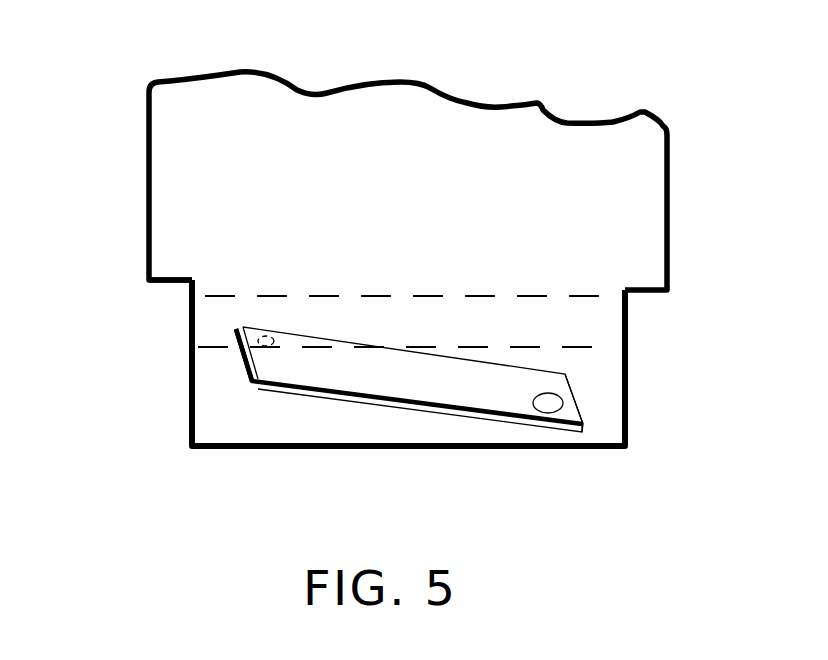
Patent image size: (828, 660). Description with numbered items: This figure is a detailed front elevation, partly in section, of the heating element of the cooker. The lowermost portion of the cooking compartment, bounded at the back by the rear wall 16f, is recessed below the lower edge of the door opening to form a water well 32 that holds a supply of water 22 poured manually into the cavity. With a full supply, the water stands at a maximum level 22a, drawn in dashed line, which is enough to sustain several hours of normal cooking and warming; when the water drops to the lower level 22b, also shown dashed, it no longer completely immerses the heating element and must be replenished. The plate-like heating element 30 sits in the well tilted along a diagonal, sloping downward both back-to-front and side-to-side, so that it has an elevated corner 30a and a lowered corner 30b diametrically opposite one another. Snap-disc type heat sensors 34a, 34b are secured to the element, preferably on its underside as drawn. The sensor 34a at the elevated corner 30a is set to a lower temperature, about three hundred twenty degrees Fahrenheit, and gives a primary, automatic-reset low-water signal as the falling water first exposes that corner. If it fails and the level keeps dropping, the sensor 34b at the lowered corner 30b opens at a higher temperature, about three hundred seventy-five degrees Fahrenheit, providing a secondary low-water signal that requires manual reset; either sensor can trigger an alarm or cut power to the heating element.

The rear wall 16f is at (421, 190).
The water 22 is at (606, 433).
The maximum water level 22a is at (396, 297).
The replenishment water level 22b is at (210, 344).
The heating element 30 is at (392, 403).
The elevated corner 30a is at (238, 328).
The lowered corner 30b is at (579, 439).
The water well 32 is at (192, 305).
The heat sensor 34a is at (272, 338).
The heat sensor 34b is at (527, 412).